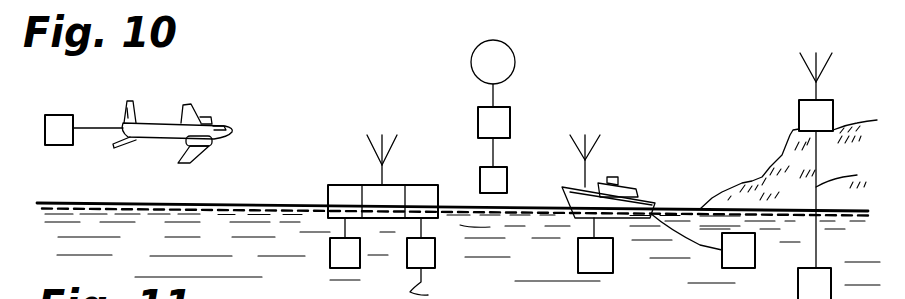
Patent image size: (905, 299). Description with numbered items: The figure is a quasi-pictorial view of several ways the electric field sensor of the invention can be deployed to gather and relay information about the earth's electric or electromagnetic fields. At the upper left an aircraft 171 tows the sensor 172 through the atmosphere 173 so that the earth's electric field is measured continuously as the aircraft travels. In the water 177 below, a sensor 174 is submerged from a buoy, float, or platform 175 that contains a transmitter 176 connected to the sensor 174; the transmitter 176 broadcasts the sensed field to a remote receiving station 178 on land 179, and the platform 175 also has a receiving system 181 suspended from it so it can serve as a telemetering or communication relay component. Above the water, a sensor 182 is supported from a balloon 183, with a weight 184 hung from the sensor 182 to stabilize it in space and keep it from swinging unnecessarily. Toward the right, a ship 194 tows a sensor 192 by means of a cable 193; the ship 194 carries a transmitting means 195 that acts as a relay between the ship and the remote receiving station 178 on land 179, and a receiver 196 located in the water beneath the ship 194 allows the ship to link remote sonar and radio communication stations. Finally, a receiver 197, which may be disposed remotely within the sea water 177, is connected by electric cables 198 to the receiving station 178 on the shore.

The aircraft 171 is at (167, 122).
The sensor 172 is at (70, 115).
The atmosphere 173 is at (288, 152).
The sensor 174 is at (433, 283).
The buoy, float, or platform 175 is at (440, 166).
The transmitter 176 is at (366, 185).
The water 177 is at (458, 244).
The remote receiving station 178 is at (833, 98).
The land 179 is at (777, 188).
The receiving system 181 is at (330, 254).
The sensor 182 is at (510, 114).
The balloon 183 is at (511, 58).
The weight 184 is at (507, 175).
The sensor 192 is at (755, 250).
The cable 193 is at (692, 245).
The ship 194 is at (625, 187).
The transmitting means 195 is at (572, 182).
The receiver 196 is at (578, 257).
The receiver 197 is at (831, 278).
The electric cables 198 is at (846, 154).